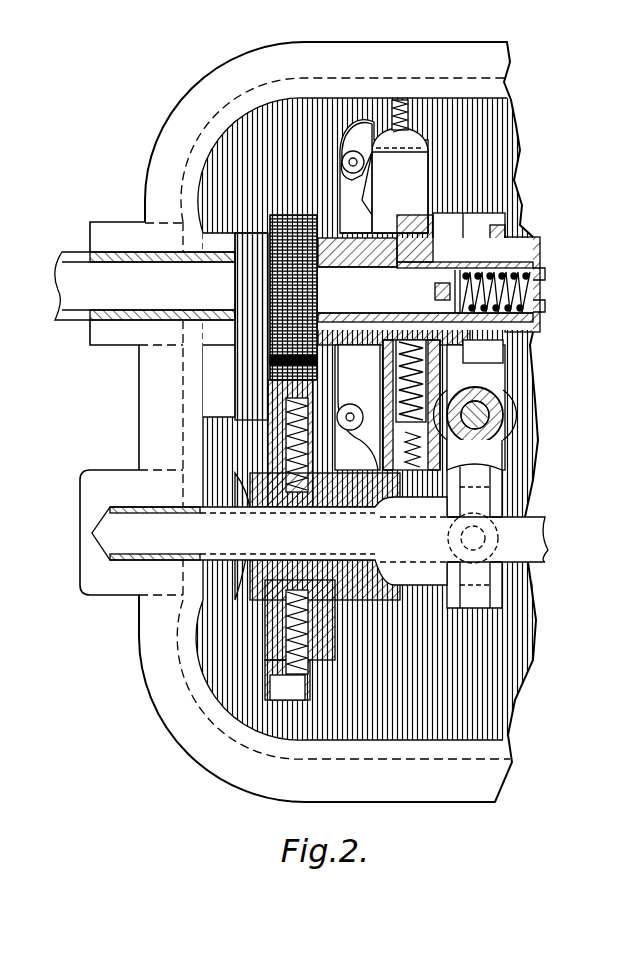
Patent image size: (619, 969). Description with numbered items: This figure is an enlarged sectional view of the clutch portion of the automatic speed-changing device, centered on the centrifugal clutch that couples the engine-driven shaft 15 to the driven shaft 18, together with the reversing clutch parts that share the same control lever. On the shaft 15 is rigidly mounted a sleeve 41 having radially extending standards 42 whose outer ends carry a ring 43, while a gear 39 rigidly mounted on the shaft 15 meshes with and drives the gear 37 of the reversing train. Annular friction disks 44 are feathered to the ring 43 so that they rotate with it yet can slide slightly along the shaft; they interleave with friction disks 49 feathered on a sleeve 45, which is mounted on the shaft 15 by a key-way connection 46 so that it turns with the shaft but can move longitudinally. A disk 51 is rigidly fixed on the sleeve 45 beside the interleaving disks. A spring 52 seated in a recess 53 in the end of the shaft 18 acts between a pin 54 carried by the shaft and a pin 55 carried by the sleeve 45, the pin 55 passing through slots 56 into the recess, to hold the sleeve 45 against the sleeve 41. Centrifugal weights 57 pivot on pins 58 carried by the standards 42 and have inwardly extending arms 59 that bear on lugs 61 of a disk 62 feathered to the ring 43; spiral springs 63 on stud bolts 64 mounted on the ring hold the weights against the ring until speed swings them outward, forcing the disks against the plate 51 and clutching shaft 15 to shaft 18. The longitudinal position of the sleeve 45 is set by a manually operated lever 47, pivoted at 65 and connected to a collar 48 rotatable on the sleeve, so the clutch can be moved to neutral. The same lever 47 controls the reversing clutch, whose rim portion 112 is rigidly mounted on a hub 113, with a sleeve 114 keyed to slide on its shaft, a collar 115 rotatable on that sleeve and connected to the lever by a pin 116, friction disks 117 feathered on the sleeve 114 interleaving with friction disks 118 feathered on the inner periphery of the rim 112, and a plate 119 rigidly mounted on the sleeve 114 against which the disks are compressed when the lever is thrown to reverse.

The shaft 15 is at (80, 298).
The shaft 18 is at (533, 273).
The gear 37 is at (283, 380).
The gear 39 is at (272, 235).
The sleeve 41 is at (300, 340).
The standards 42 is at (384, 176).
The ring 43 is at (422, 152).
The annular friction disks 44 is at (432, 382).
The sleeve 45 is at (478, 358).
The key-way connection 46 is at (425, 257).
The manually operated lever 47 is at (483, 458).
The collar 48 is at (478, 245).
The annular friction disks 49 is at (442, 217).
The disk 51 is at (487, 398).
The spring 52 is at (545, 274).
The recess 53 is at (545, 308).
The pin 54 is at (540, 300).
The pin 55 is at (447, 288).
The slots 56 is at (457, 303).
The centrifugal weights 57 is at (358, 133).
The pins 58 is at (357, 163).
The inwardly extending arms 59 is at (352, 405).
The lugs 61 is at (267, 447).
The disk 62 is at (395, 358).
The spiral springs 63 is at (410, 112).
The stud bolts 64 is at (398, 103).
The pivot 65 is at (505, 419).
The rim portion 112 is at (270, 668).
The hub 113 is at (285, 585).
The sleeve 114 is at (320, 541).
The collar 115 is at (483, 585).
The pin 116 is at (473, 538).
The friction disks 117 is at (245, 478).
The friction disks 118 is at (270, 635).
The plate 119 is at (333, 610).